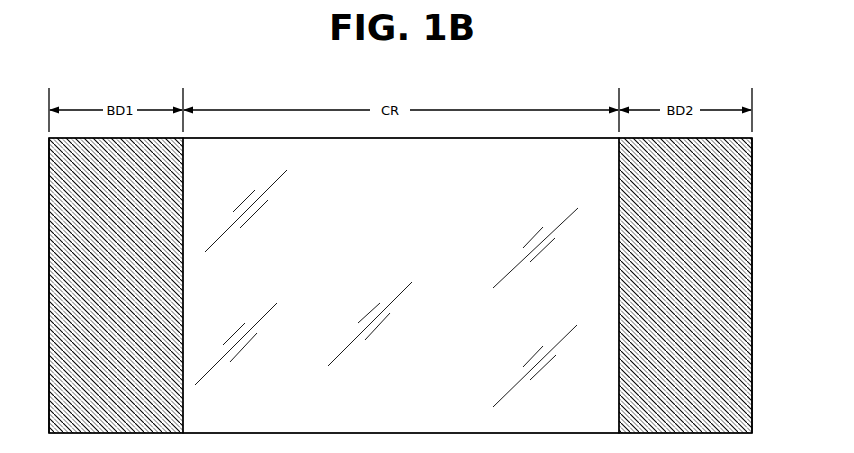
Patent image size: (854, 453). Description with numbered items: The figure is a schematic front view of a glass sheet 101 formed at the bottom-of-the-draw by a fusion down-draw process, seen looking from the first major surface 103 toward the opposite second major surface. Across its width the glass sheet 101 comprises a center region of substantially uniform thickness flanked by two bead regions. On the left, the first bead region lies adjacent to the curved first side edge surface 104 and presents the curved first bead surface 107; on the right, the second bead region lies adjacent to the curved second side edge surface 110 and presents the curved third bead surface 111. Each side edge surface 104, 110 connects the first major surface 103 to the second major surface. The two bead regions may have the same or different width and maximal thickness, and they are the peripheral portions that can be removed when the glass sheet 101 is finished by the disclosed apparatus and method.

The glass sheet 101 is at (246, 119).
The first major surface 103 is at (401, 285).
The first side edge surface 104 is at (48, 388).
The first bead surface 107 is at (116, 285).
The second side edge surface 110 is at (753, 287).
The third bead surface 111 is at (685, 285).